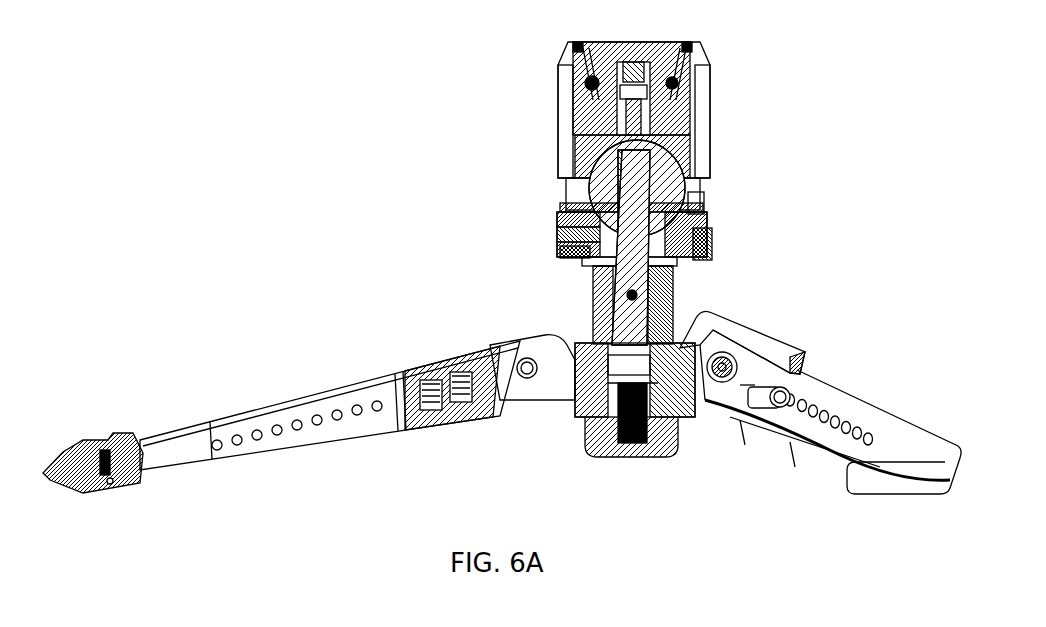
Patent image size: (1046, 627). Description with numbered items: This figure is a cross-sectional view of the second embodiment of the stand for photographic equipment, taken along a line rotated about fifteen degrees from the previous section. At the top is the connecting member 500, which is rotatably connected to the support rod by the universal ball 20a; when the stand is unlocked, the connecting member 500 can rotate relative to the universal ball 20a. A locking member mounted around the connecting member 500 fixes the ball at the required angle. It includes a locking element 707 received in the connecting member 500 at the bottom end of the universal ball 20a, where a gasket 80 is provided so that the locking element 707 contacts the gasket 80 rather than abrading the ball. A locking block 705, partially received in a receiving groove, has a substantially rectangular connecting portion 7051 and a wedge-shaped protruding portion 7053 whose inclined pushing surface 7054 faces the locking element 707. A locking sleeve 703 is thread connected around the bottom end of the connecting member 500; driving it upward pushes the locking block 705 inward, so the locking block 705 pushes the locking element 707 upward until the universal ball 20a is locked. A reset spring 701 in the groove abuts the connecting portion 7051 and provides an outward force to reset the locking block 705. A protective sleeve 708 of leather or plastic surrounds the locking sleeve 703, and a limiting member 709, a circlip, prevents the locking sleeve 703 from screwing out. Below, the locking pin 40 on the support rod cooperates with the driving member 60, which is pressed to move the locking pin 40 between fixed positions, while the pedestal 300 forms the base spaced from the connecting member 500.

The connecting member 500 is at (578, 80).
The universal ball 20a is at (572, 158).
The locking element 707 is at (563, 205).
The locking block 705 is at (536, 237).
The pushing surface 7054 is at (560, 218).
The protruding portion 7053 is at (560, 228).
The connecting portion 7051 is at (560, 240).
The gasket 80 is at (697, 205).
The protective sleeve 708 is at (712, 248).
The locking sleeve 703 is at (563, 250).
The limiting member 709 is at (578, 258).
The reset spring 701 is at (600, 270).
The locking pin 40 is at (668, 315).
The driving member 60 is at (765, 335).
The pedestal 300 is at (850, 413).